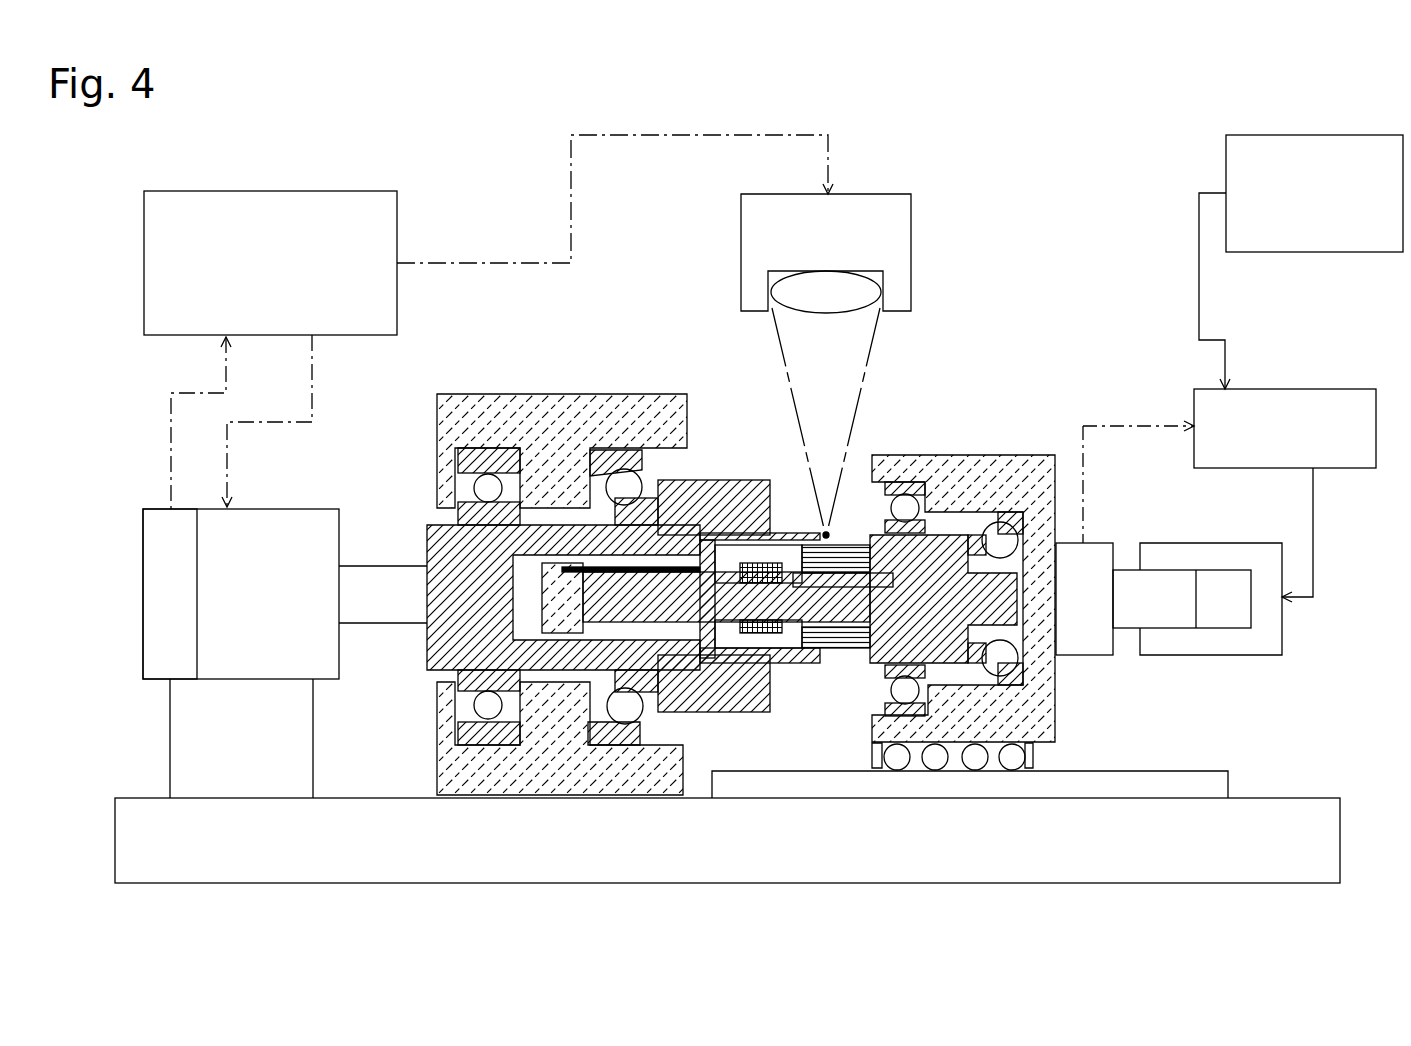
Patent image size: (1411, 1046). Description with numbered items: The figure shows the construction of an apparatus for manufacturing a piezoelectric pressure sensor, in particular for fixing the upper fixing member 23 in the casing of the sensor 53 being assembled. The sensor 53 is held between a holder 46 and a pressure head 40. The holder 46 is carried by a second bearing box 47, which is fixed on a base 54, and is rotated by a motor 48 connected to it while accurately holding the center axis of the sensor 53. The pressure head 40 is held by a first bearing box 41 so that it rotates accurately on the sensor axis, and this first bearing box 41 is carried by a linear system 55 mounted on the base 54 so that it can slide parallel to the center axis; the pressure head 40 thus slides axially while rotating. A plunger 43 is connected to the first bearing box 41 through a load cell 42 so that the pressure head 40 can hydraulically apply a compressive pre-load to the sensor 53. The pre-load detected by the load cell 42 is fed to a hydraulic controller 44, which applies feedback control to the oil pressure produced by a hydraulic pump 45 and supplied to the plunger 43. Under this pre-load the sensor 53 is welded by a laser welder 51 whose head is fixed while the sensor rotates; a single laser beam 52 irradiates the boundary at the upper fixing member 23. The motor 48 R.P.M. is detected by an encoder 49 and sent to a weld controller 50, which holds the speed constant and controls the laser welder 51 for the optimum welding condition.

The upper fixing member 23 is at (847, 637).
The pressure head 40 is at (947, 563).
The first bearing box 41 is at (952, 718).
The load cell 42 is at (1078, 618).
The plunger 43 is at (1249, 648).
The hydraulic controller 44 is at (1303, 387).
The hydraulic pump 45 is at (1225, 168).
The holder 46 is at (687, 683).
The second bearing box 47 is at (553, 752).
The motor 48 is at (287, 508).
The encoder 49 is at (168, 653).
The weld controller 50 is at (398, 218).
The laser welder 51 is at (912, 218).
The laser beam 52 is at (853, 372).
The sensor 53 is at (824, 535).
The base 54 is at (350, 880).
The linear system 55 is at (1060, 783).